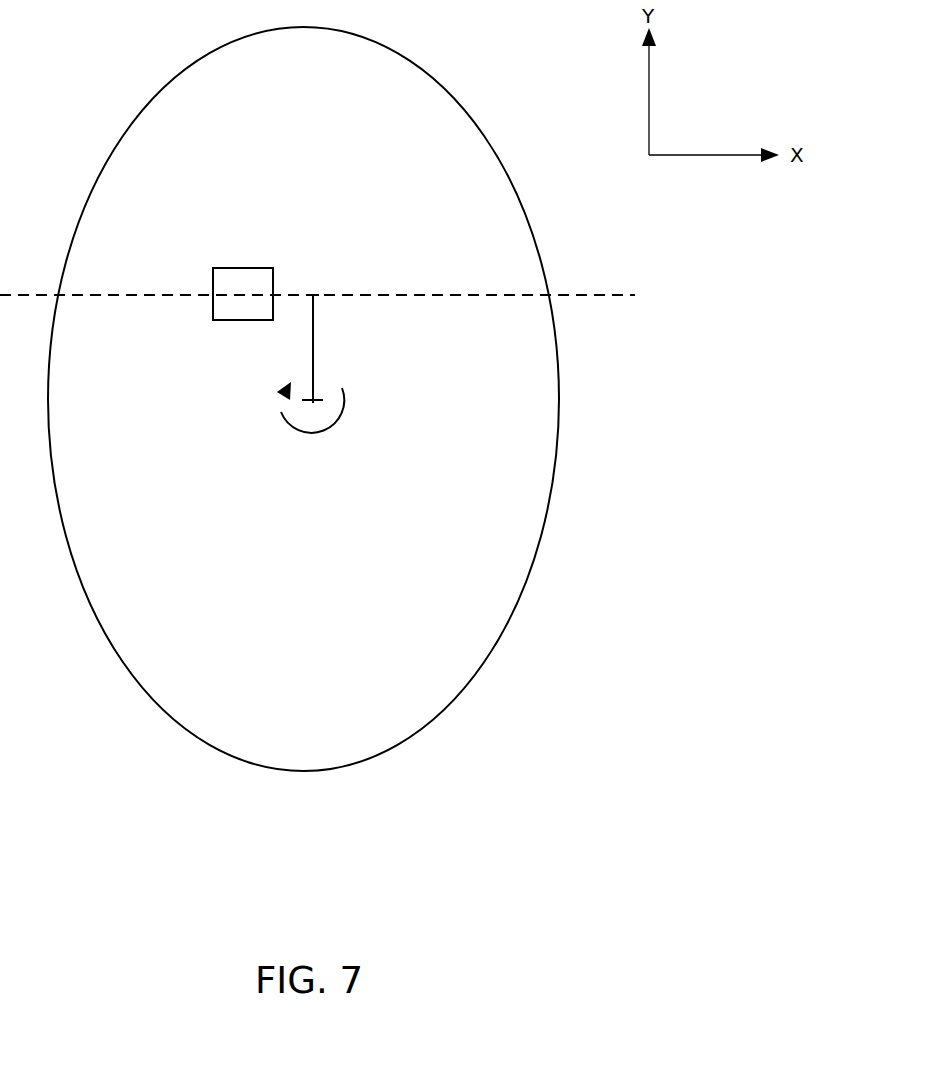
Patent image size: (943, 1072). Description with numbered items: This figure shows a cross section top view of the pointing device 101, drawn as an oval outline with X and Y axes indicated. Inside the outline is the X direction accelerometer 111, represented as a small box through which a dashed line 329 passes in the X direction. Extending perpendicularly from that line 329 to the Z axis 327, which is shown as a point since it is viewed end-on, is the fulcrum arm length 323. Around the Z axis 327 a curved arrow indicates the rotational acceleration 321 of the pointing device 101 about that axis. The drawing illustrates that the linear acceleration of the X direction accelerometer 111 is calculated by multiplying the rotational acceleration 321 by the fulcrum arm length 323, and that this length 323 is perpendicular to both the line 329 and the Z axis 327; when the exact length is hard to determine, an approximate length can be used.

The pointing device 101 is at (435, 105).
The X direction accelerometer 111 is at (245, 268).
The line 329 is at (573, 295).
The fulcrum arm length 323 is at (313, 347).
The Z axis 327 is at (317, 402).
The rotational acceleration 321 is at (288, 420).